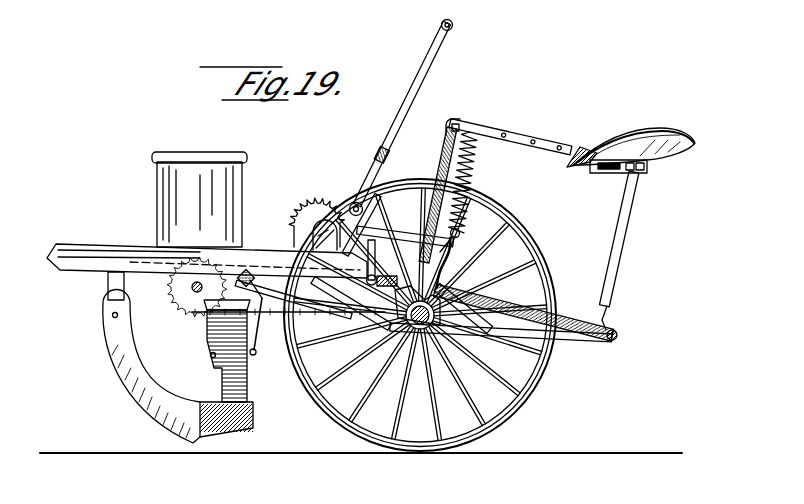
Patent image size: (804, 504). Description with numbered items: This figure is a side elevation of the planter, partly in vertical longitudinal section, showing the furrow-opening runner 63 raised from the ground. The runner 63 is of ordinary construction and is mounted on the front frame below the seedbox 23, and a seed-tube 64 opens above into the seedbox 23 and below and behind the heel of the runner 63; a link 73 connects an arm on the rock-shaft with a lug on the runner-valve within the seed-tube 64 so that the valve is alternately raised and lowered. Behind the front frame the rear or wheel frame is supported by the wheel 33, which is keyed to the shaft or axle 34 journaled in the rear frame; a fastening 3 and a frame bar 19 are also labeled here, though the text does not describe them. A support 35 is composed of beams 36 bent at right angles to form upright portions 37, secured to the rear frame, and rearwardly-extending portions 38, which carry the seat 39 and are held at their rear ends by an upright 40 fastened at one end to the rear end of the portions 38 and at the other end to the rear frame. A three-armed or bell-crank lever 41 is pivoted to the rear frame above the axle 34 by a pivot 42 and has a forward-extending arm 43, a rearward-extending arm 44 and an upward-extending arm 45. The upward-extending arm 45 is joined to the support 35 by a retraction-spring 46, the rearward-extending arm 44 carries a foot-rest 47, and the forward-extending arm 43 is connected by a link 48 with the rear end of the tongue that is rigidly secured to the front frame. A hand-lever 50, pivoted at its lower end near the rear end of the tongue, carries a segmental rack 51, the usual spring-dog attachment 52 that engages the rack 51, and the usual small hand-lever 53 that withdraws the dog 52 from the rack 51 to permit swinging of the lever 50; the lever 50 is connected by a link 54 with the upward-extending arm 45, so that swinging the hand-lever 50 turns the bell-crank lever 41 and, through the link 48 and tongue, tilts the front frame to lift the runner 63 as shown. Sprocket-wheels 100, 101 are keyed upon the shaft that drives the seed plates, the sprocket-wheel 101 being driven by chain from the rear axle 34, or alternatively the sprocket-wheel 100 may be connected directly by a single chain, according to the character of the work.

The bolt 3 is at (615, 340).
The beam 19 is at (207, 261).
The seedbox 23 is at (186, 199).
The wheel 33 is at (545, 378).
The shaft or axle 34 is at (420, 330).
The support 35 is at (470, 124).
The beam 36 is at (528, 140).
The upright portion 37 is at (446, 160).
The rearwardly-extending portion 38 is at (560, 148).
The seat 39 is at (662, 158).
The upright 40 is at (624, 244).
The three-armed or bell-crank lever 41 is at (465, 292).
The pivot 42 is at (444, 272).
The forward-extending arm 43 is at (382, 236).
The rearward-extending arm 44 is at (498, 310).
The upward-extending arm 45 is at (462, 236).
The retraction-spring 46 is at (476, 178).
The foot-rest 47 is at (490, 336).
The link 48 is at (368, 262).
The hand-lever 50 is at (420, 80).
The segmental rack 51 is at (312, 208).
The spring-dog attachment 52 is at (355, 200).
The hand-lever 53 is at (441, 20).
The link 54 is at (388, 218).
The furrow-opening runner 63 is at (108, 358).
The seed-tube 64 is at (212, 336).
The link 73 is at (256, 356).
The sprocket-wheel 100 is at (272, 318).
The sprocket-wheel 101 is at (180, 305).